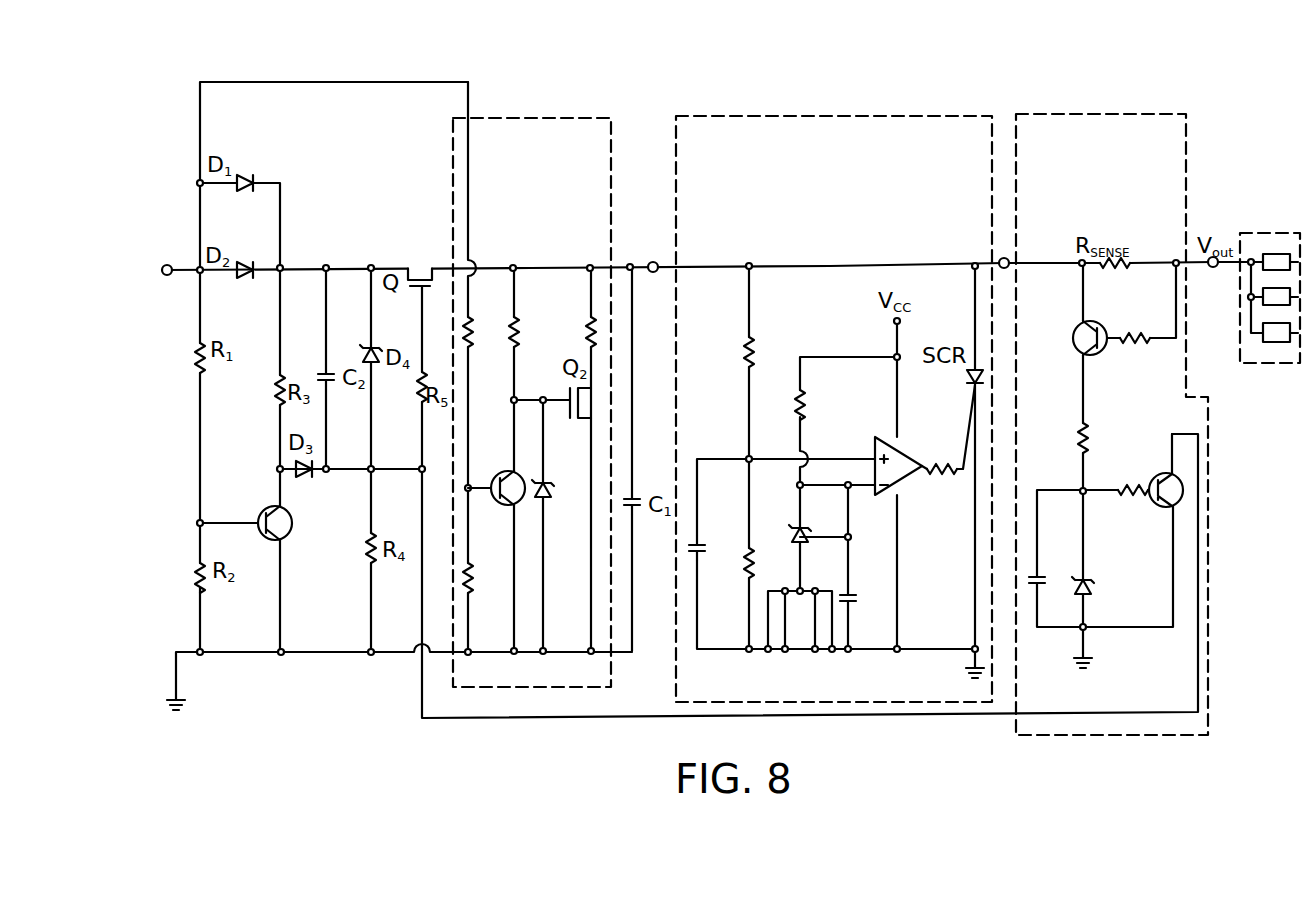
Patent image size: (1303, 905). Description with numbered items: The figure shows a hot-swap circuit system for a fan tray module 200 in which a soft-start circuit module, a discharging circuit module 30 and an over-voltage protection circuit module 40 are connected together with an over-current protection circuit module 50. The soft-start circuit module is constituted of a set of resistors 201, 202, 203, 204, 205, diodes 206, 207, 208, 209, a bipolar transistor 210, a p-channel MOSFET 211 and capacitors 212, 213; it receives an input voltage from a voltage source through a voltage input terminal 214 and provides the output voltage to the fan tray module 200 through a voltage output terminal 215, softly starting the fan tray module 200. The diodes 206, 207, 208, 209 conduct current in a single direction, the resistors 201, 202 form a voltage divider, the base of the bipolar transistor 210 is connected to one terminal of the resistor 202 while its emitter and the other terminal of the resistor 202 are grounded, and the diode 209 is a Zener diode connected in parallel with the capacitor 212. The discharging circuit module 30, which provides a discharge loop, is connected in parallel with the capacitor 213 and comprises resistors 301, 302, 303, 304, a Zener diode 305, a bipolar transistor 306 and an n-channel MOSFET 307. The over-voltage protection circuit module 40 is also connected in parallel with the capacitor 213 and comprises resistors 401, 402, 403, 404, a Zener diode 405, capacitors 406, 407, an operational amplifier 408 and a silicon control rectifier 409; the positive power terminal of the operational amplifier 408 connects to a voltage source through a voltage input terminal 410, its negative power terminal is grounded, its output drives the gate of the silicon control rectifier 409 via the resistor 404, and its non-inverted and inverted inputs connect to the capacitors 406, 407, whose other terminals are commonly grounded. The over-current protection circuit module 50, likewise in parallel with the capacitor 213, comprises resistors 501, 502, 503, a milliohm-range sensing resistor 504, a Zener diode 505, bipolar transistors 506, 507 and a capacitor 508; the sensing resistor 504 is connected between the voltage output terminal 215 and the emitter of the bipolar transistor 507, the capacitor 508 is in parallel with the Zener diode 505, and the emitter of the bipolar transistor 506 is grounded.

The fan tray module 200 is at (1268, 233).
The resistor 201 is at (197, 360).
The resistor 202 is at (196, 586).
The resistor 203 is at (278, 392).
The resistor 204 is at (369, 552).
The resistor 205 is at (418, 402).
The diode 206 is at (250, 178).
The diode 207 is at (246, 262).
The diode 208 is at (313, 478).
The Zener diode 209 is at (366, 345).
The bipolar transistor 210 is at (293, 523).
The p-channel MOSFET 211 is at (424, 268).
The capacitor 212 is at (322, 372).
The capacitor 213 is at (640, 498).
The voltage input terminal 214 is at (167, 280).
The voltage output terminal 215 is at (1213, 270).
The discharging circuit module 30 is at (531, 118).
The resistor 301 is at (474, 336).
The resistor 302 is at (478, 580).
The resistor 303 is at (520, 336).
The resistor 304 is at (588, 330).
The Zener diode 305 is at (551, 498).
The bipolar transistor 306 is at (507, 470).
The n-channel MOSFET 307 is at (571, 418).
The over-voltage protection circuit module 40 is at (832, 116).
The resistor 401 is at (745, 352).
The resistor 402 is at (746, 572).
The resistor 403 is at (796, 405).
The resistor 404 is at (953, 472).
The Zener diode 405 is at (796, 525).
The capacitor 406 is at (703, 545).
The capacitor 407 is at (862, 598).
The operational amplifier 408 is at (874, 440).
The silicon control rectifier 409 is at (965, 377).
The voltage input terminal 410 is at (893, 321).
The over-current protection circuit module 50 is at (1083, 114).
The resistor 501 is at (1080, 435).
The resistor 502 is at (1132, 485).
The resistor 503 is at (1140, 342).
The sensing resistor 504 is at (1118, 265).
The Zener diode 505 is at (1094, 581).
The bipolar transistor 506 is at (1162, 508).
The bipolar transistor 507 is at (1092, 332).
The capacitor 508 is at (1040, 575).